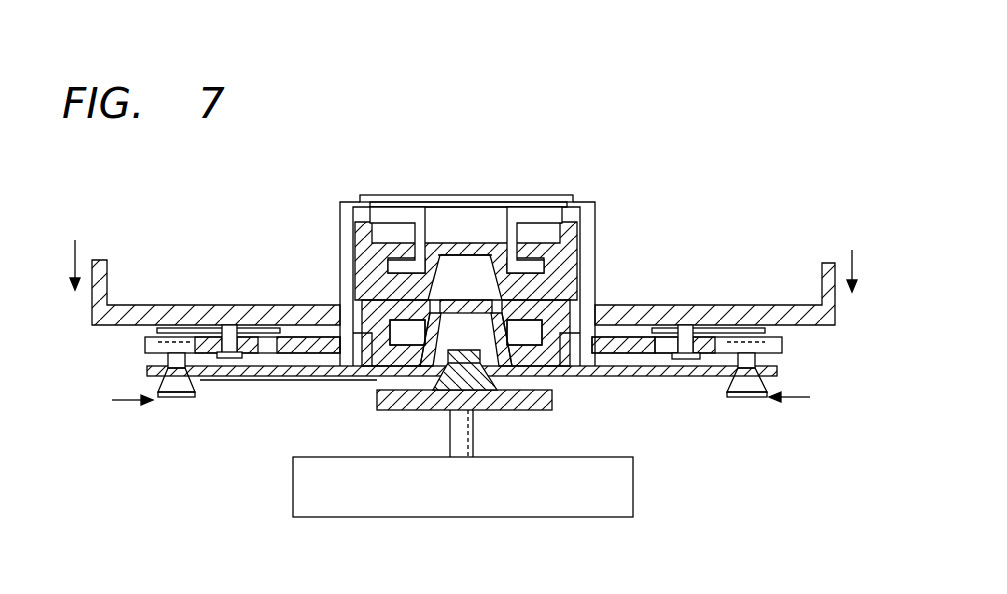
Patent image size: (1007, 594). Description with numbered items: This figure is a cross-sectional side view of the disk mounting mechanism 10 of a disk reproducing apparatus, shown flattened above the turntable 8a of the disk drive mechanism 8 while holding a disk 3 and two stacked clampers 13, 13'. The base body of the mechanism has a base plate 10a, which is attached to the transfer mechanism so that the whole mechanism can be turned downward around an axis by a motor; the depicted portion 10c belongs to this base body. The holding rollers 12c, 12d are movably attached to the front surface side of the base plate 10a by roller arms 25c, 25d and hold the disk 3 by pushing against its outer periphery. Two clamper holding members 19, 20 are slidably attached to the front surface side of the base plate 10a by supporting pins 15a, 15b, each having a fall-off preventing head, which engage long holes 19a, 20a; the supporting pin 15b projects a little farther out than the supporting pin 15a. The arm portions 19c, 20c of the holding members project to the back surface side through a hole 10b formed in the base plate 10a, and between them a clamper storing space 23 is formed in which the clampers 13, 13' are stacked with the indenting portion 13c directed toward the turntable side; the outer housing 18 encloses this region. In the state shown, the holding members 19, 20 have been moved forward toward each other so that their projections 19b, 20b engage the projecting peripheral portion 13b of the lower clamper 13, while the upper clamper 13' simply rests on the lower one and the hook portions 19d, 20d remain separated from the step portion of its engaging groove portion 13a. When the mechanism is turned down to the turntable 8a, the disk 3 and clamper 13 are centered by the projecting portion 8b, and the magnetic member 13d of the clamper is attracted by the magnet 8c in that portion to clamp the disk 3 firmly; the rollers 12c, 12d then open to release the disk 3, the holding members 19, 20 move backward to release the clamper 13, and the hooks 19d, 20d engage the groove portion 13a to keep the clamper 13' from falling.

The disk 3 is at (233, 381).
The disk drive mechanism 8 is at (477, 502).
The turntable 8a is at (552, 410).
The projecting portion of the turntable 8b is at (482, 388).
The magnet 8c is at (485, 340).
The disk mounting mechanism 10 is at (463, 229).
The base plate 10a is at (195, 305).
The hole 10b is at (332, 304).
The top wall of housing 10c is at (592, 205).
The holding roller 12c is at (175, 400).
The holding roller 12d is at (753, 400).
The clamper 13 is at (462, 395).
The clamper 13' is at (518, 261).
The engaging groove portion 13a is at (353, 262).
The projecting peripheral portion 13b is at (588, 330).
The indenting portion 13c is at (380, 380).
The magnetic member 13d is at (462, 305).
The supporting pin 15a is at (228, 325).
The supporting pin 15b is at (685, 354).
The cover housing 18 is at (600, 235).
The clamper holding member 19 is at (195, 392).
The long hole 19a is at (247, 380).
The projection 19b is at (322, 368).
The arm portion 19c is at (338, 272).
The hook portion 19d is at (416, 225).
The clamper holding member 20 is at (734, 385).
The long hole 20a is at (670, 347).
The projection 20b is at (593, 366).
The arm portion 20c is at (596, 262).
The hook portion 20d is at (513, 258).
The clamper storing space 23 is at (472, 202).
The roller arm 25c is at (157, 331).
The roller arm 25d is at (767, 330).